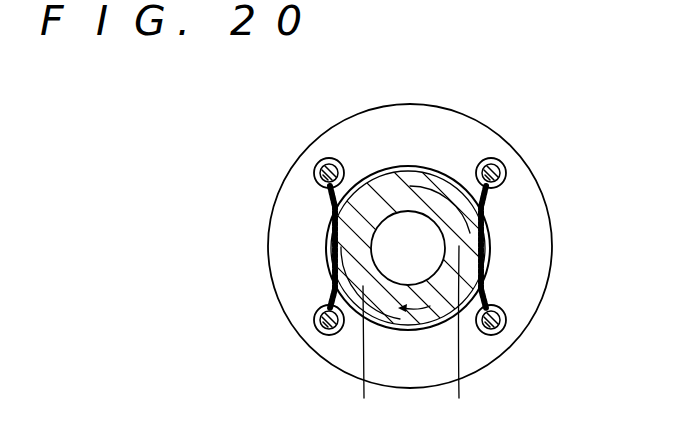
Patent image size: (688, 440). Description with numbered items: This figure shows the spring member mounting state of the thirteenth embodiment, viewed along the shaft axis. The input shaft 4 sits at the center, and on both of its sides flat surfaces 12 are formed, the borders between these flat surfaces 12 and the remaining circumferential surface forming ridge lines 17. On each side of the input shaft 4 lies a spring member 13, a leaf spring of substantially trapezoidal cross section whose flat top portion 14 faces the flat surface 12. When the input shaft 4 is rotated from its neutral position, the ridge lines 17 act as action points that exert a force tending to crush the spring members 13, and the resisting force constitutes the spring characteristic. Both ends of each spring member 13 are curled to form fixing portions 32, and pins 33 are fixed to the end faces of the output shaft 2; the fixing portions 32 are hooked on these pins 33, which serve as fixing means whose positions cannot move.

The output shaft 2 is at (402, 374).
The input shaft 4 is at (422, 188).
The flat surface 12 is at (406, 337).
The spring member 13 is at (331, 218).
The flat top portion 14 is at (346, 257).
The ridge line 17 is at (336, 191).
The fixing portion 32 is at (343, 159).
The pin 33 is at (338, 158).